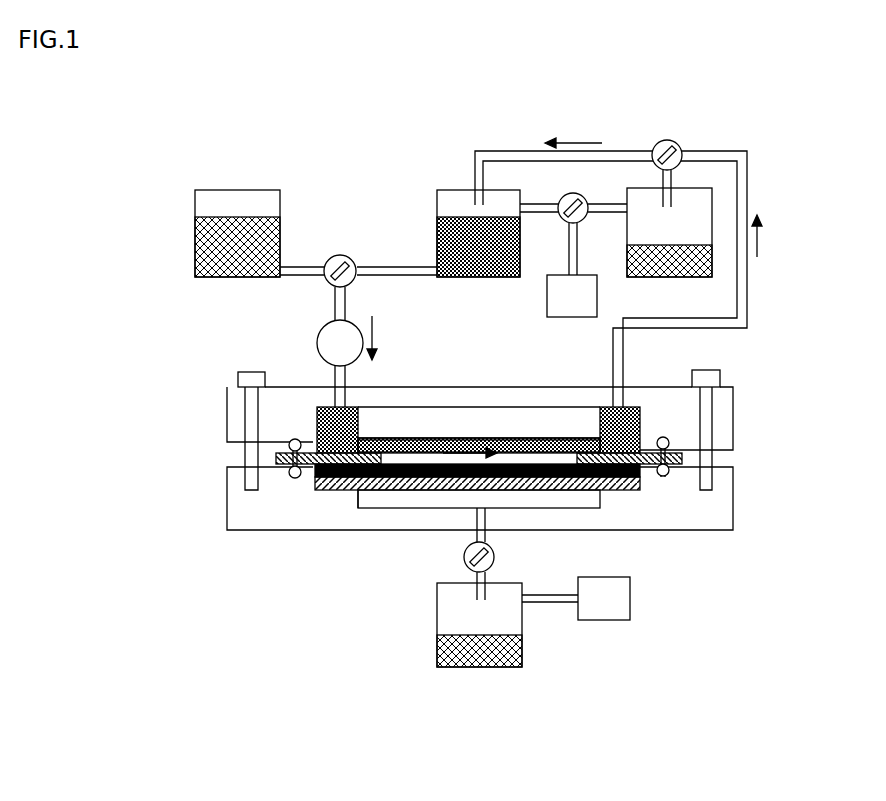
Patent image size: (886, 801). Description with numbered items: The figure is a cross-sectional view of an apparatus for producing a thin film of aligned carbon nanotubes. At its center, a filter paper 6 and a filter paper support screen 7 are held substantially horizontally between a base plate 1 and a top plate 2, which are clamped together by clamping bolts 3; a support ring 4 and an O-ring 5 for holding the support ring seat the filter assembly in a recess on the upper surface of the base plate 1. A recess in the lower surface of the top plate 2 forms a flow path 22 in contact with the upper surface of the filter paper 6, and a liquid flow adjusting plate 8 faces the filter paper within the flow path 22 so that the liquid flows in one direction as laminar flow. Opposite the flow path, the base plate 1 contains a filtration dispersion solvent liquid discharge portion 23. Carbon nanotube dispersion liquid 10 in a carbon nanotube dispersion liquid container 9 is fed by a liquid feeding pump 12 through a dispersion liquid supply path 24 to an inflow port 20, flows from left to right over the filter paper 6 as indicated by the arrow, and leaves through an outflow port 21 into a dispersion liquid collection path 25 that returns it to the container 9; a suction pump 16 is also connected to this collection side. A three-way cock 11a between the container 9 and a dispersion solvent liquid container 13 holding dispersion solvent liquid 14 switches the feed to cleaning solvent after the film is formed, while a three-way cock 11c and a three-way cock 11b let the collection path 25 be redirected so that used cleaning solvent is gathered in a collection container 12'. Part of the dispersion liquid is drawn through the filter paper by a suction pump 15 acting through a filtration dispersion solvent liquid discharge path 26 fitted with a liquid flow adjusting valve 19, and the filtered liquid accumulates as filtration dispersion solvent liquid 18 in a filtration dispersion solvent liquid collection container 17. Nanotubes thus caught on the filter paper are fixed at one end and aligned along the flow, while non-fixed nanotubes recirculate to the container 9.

The base plate 1 is at (720, 492).
The top plate 2 is at (690, 437).
The clamping bolt 3 is at (240, 380).
The support ring 4 is at (648, 470).
The O-ring for holding a support ring 5 is at (290, 446).
The filter paper 6 is at (318, 488).
The filter paper support screen 7 is at (620, 490).
The liquid flow adjusting plate 8 is at (518, 423).
The carbon nanotube dispersion liquid container 9 is at (452, 185).
The carbon nanotube dispersion liquid 10 is at (450, 242).
The three-way cock 11a is at (329, 259).
The three-way cock 11b is at (655, 145).
The three-way cock 11c is at (560, 198).
The liquid feeding pump 12 is at (239, 343).
The recovery tank 12' is at (692, 201).
The dispersion solvent liquid container 13 is at (200, 195).
The dispersion solvent liquid 14 is at (230, 262).
The suction pump 15 is at (575, 300).
The suction pump 16 is at (600, 600).
The filtration dispersion solvent liquid collection container 17 is at (437, 615).
The filtration dispersion solvent liquid 18 is at (455, 650).
The liquid flow adjusting valve 19 is at (488, 571).
The inflow port 20 is at (290, 440).
The outflow port 21 is at (647, 420).
The flow path 22 is at (550, 440).
The filtration dispersion solvent liquid discharge portion 23 is at (370, 507).
The dispersion liquid supply path 24 is at (333, 305).
The dispersion liquid collection path 25 is at (748, 178).
The filtration dispersion solvent liquid discharge path 26 is at (470, 523).